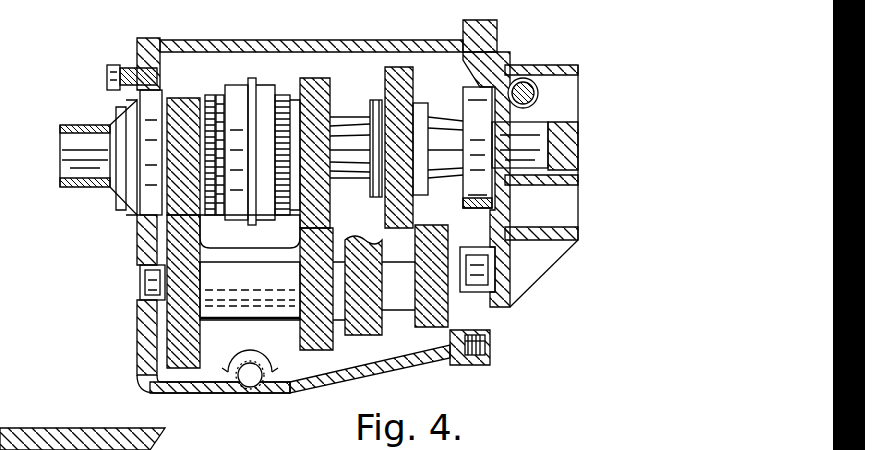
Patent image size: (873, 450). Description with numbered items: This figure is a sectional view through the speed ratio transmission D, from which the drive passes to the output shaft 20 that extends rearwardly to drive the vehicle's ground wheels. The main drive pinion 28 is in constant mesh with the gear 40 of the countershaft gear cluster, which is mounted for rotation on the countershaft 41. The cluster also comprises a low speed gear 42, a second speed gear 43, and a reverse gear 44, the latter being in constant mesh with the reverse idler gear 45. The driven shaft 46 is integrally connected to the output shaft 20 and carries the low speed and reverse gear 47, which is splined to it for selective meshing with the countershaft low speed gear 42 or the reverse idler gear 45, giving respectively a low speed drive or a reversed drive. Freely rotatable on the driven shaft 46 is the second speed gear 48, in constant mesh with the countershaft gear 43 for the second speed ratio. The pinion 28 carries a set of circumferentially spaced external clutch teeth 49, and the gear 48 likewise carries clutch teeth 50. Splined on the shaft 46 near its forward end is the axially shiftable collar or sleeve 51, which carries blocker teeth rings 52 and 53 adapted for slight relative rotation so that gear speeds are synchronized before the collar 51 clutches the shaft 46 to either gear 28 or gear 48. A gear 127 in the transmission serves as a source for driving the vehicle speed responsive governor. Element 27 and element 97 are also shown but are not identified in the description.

The speed ratio transmission D is at (300, 42).
The output shaft 20 is at (580, 150).
The input shaft 27 is at (60, 170).
The main drive pinion 28 is at (178, 98).
The countershaft cluster gear 40 is at (196, 352).
The countershaft 41 is at (140, 285).
The low speed gear 42 is at (372, 338).
The second speed gear 43 is at (322, 350).
The reverse gear 44 is at (425, 365).
The reverse idler gear 45 is at (432, 228).
The driven shaft 46 is at (338, 117).
The low speed and reverse gear 47 is at (413, 80).
The second speed gear 48 is at (312, 78).
The clutch teeth 49 is at (208, 95).
The clutch teeth 50 is at (284, 95).
The collar or sleeve 51 is at (252, 78).
The blocker teeth ring 52 is at (222, 95).
The blocker teeth ring 53 is at (290, 230).
The thrust plate 97 is at (375, 100).
The gear 127 is at (540, 93).